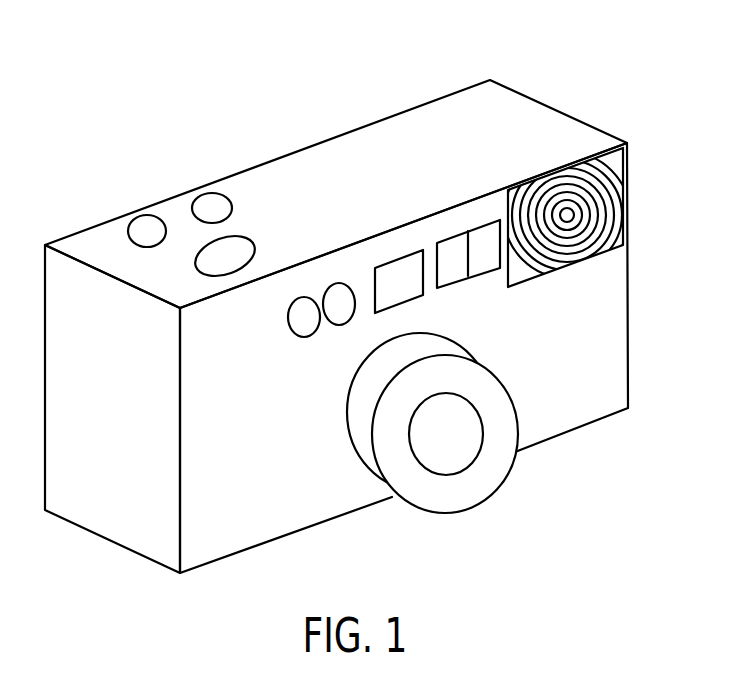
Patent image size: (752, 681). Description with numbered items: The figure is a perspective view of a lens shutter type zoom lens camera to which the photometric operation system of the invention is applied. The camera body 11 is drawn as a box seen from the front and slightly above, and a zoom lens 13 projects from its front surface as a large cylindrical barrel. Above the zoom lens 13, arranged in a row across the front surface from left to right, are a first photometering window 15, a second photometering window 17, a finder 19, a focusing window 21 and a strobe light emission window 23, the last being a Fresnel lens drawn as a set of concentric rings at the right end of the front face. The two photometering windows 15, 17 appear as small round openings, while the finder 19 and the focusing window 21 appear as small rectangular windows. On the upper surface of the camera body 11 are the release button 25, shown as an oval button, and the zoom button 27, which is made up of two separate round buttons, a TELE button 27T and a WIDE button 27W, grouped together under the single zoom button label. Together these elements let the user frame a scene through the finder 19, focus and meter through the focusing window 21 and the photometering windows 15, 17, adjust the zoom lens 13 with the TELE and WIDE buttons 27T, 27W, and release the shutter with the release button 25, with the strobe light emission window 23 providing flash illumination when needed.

The camera body 11 is at (518, 110).
The zoom lens 13 is at (453, 453).
The first photometering window 15 is at (302, 310).
The second photometering window 17 is at (338, 290).
The finder 19 is at (394, 265).
The focusing window 21 is at (452, 247).
The strobe light emission window 23 is at (593, 217).
The release button 25 is at (203, 260).
The zoom button 27 is at (152, 146).
The TELE button 27T is at (143, 228).
The WIDE button 27W is at (192, 159).